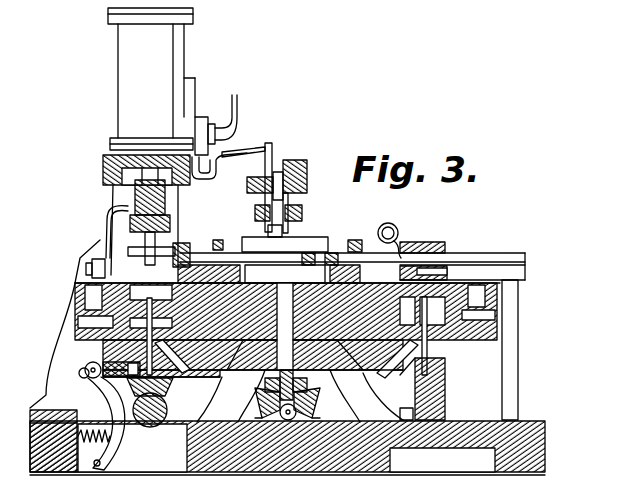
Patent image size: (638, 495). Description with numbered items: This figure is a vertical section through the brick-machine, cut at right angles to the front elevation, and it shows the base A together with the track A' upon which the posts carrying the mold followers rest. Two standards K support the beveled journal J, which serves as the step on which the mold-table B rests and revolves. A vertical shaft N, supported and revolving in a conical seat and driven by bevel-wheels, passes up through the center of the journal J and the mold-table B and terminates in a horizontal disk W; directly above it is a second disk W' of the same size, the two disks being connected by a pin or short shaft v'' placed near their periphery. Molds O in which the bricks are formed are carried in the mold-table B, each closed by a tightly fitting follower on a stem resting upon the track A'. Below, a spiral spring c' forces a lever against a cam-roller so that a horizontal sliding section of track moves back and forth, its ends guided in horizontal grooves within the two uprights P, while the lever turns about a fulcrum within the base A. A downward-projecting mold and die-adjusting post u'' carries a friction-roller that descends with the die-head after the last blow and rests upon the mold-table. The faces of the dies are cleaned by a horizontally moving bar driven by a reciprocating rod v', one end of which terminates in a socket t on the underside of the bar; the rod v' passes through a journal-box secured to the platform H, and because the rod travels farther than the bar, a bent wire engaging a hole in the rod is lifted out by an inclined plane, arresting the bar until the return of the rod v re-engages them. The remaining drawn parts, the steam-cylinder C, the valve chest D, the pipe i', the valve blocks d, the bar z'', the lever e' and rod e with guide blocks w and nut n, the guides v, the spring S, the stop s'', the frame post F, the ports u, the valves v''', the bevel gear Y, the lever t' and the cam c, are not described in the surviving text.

The cylinder C is at (172, 81).
The valve chest D is at (137, 170).
The pipe i' is at (219, 166).
The upright P is at (265, 296).
The valve block d is at (224, 212).
The bar z'' is at (151, 246).
The mold and die-adjusting post u'' is at (114, 227).
The horizontally-reciprocating rod v' is at (92, 275).
The lever e' is at (243, 148).
The rod e is at (272, 187).
The guide block w is at (277, 213).
The nut n is at (278, 231).
The disk W' is at (285, 244).
The pin or short shaft v'' is at (349, 253).
The rod v is at (320, 259).
The horizontal disk W is at (285, 274).
The platform H is at (345, 274).
The spring S is at (389, 240).
The stop s'' is at (355, 241).
The socket t is at (432, 255).
The frame post F is at (510, 350).
The mold-table B is at (286, 321).
The port u is at (285, 297).
The valve v''' is at (286, 319).
The mold O is at (287, 330).
The vertical shaft N is at (285, 341).
The beveled journal J is at (290, 350).
The standard K is at (305, 364).
The bevel gear Y is at (287, 399).
The track A' is at (422, 389).
The base A is at (287, 442).
The spiral spring c' is at (94, 444).
The lever t' is at (102, 416).
The cam c is at (138, 394).